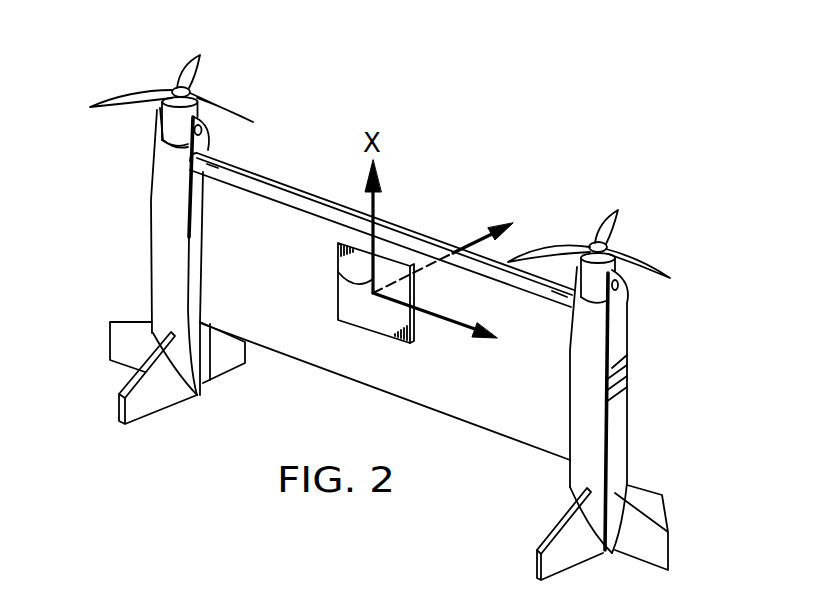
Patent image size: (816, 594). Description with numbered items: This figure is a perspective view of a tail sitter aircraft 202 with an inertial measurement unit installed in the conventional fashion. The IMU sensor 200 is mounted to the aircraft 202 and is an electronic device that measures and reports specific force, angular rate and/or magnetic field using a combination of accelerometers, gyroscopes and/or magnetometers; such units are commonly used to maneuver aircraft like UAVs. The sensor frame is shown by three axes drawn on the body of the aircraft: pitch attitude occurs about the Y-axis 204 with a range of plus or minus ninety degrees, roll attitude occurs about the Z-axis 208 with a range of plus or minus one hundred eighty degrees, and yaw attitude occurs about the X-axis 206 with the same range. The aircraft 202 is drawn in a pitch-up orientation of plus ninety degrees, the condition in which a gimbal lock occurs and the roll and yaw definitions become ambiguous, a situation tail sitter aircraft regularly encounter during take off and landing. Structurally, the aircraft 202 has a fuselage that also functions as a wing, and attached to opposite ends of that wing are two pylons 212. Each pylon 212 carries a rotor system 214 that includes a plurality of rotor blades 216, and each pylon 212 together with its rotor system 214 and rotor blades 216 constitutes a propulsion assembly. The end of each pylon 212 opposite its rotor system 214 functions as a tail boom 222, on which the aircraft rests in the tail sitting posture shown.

The IMU sensor 200 is at (345, 300).
The aircraft 202 is at (423, 142).
The Y-axis 204 is at (450, 331).
The X-axis 206 is at (338, 277).
The Z-axis 208 is at (473, 241).
The pylon 212 is at (160, 197).
The rotor system 214 is at (207, 87).
The rotor blades 216 is at (192, 62).
The tail boom 222 is at (110, 381).